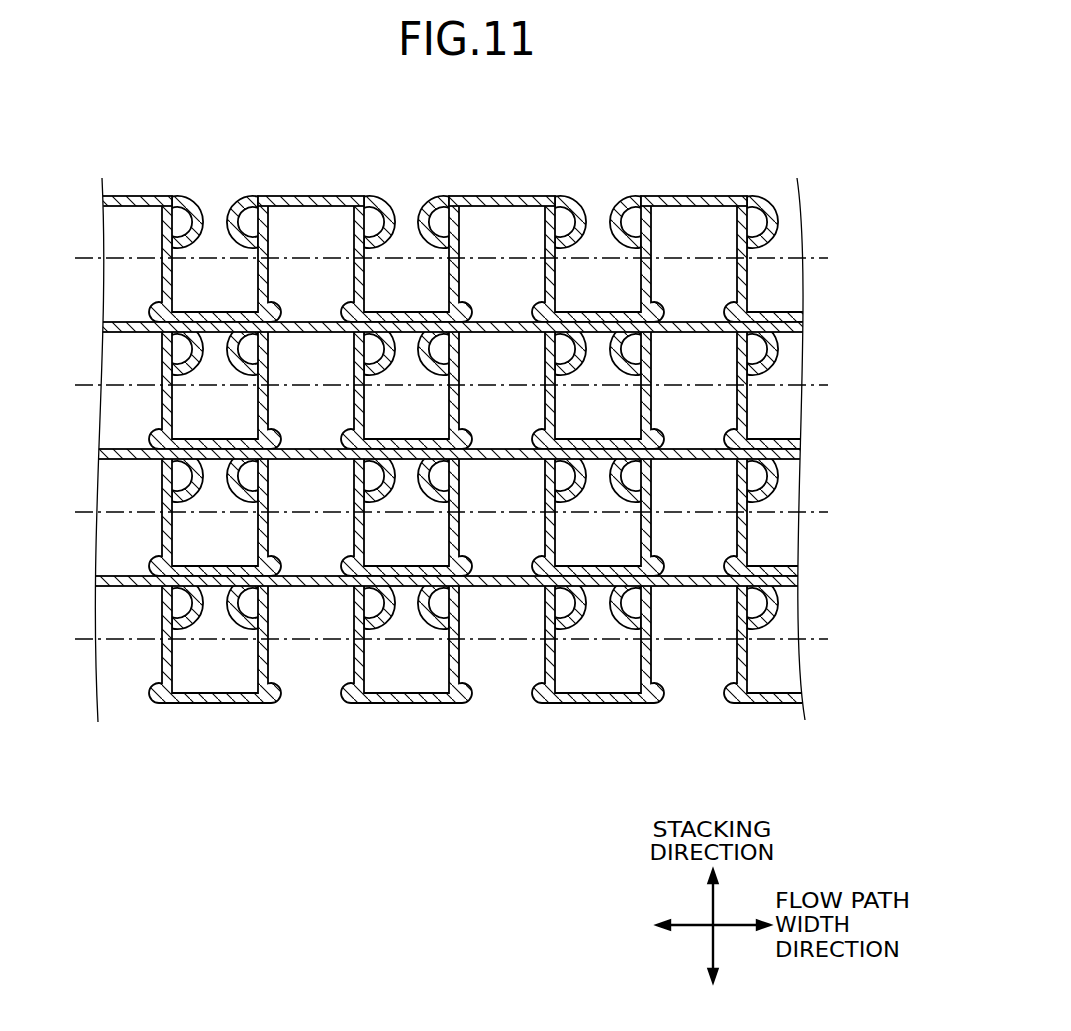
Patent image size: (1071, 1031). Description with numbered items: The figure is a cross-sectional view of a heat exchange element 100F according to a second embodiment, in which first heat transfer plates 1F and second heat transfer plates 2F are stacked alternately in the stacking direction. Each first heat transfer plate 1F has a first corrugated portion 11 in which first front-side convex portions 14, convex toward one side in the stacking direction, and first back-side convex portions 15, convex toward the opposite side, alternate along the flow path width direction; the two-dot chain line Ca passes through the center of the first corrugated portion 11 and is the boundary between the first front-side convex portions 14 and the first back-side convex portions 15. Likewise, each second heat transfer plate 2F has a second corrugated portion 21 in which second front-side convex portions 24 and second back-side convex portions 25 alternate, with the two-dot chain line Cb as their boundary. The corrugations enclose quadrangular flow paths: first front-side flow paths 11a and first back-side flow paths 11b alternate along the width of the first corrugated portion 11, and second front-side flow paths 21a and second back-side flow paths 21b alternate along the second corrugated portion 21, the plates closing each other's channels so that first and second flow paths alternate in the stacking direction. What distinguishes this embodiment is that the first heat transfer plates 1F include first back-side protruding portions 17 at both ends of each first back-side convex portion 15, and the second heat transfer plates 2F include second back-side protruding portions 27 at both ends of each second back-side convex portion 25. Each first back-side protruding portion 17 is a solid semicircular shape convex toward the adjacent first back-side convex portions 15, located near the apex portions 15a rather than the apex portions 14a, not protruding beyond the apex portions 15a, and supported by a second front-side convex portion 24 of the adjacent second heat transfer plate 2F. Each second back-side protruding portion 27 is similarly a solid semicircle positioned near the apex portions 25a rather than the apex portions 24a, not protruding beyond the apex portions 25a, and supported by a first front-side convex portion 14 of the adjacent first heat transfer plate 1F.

The first corrugated portion 11 is at (470, 440).
The first front-side convex portion 14 is at (538, 197).
The apex portion of first front-side convex portion 14a is at (497, 197).
The first back-side convex portion 15 is at (196, 311).
The apex portion of first back-side convex portion 15a is at (477, 310).
The first back-side protruding portion 17 is at (342, 310).
The second corrugated portion 21 is at (457, 593).
The second front-side convex portion 24 is at (280, 317).
The apex portion of second front-side convex portion 24a is at (470, 581).
The second back-side convex portion 25 is at (167, 425).
The apex portion of second back-side convex portion 25a is at (440, 703).
The second back-side protruding portion 27 is at (158, 434).
The first heat transfer plate 1F is at (816, 319).
The second heat transfer plate 2F is at (814, 446).
The heat exchange element 100F is at (737, 155).
The center line of first corrugated portion Ca is at (826, 258).
The center line of second corrugated portion Cb is at (823, 387).
The first front-side flow path 11a is at (498, 400).
The first back-side flow path 11b is at (414, 400).
The second front-side flow path 21a is at (498, 527).
The second back-side flow path 21b is at (414, 527).